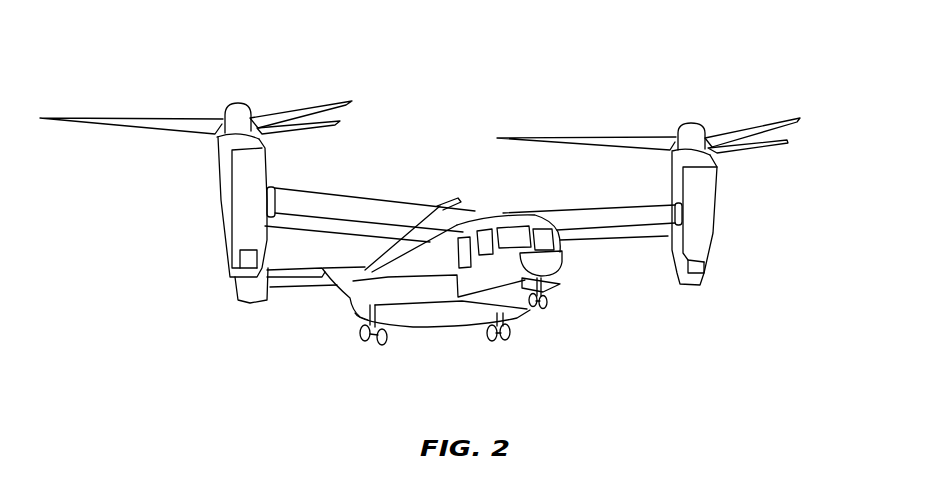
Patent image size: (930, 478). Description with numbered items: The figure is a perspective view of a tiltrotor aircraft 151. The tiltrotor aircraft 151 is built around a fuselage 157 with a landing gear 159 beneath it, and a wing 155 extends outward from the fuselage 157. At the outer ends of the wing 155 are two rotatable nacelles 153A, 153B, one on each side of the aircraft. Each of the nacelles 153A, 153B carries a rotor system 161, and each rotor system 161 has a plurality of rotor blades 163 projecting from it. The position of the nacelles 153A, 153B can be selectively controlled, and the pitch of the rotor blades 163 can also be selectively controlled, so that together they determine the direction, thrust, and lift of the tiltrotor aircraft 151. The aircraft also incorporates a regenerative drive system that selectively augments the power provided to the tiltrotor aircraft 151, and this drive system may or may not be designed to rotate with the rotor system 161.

The tiltrotor aircraft 151 is at (507, 87).
The rotatable nacelle 153A is at (202, 221).
The rotatable nacelle 153B is at (728, 232).
The wing 155 is at (345, 196).
The fuselage 157 is at (578, 276).
The landing gear 159 is at (362, 338).
The rotor system 161 is at (201, 90).
The rotor blades 163 is at (300, 100).